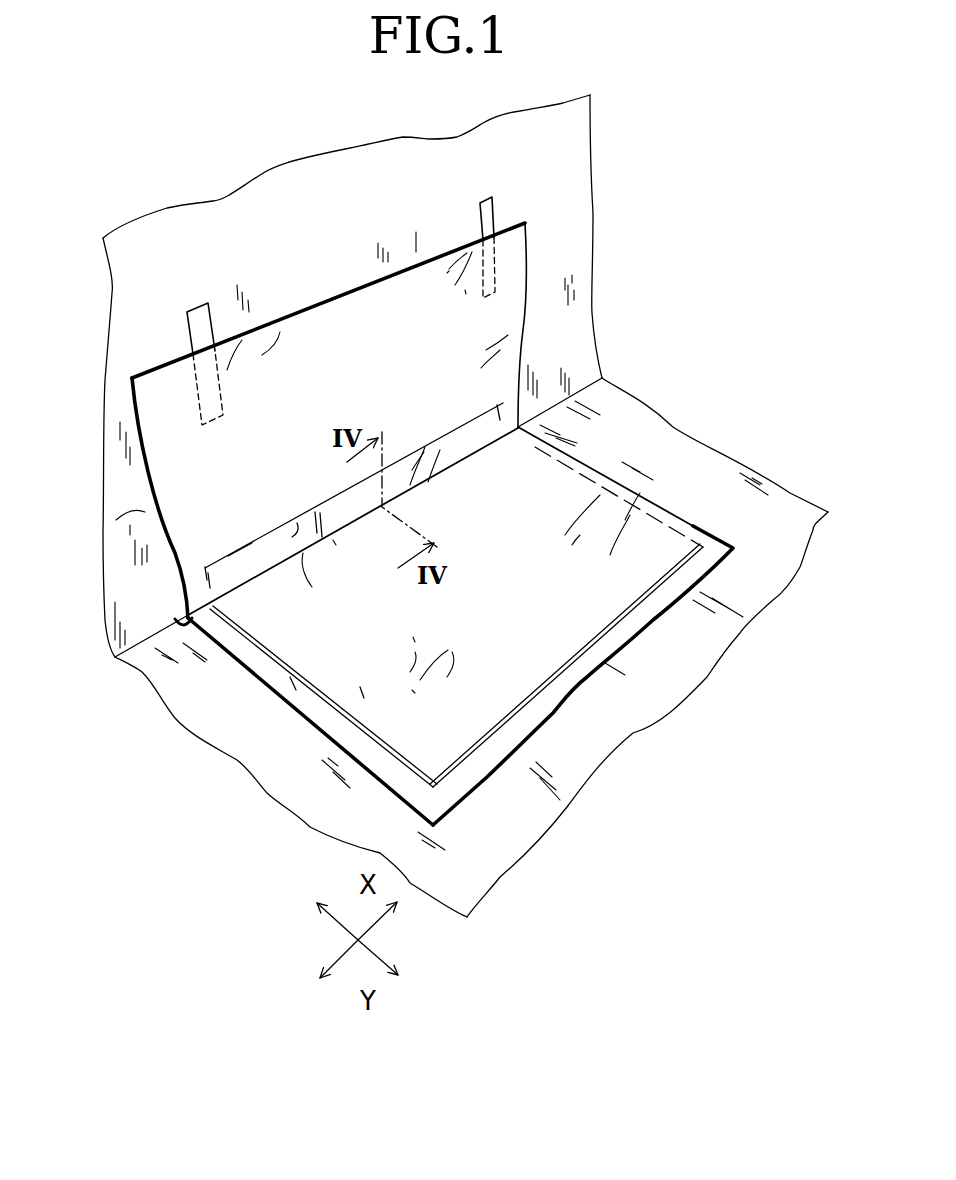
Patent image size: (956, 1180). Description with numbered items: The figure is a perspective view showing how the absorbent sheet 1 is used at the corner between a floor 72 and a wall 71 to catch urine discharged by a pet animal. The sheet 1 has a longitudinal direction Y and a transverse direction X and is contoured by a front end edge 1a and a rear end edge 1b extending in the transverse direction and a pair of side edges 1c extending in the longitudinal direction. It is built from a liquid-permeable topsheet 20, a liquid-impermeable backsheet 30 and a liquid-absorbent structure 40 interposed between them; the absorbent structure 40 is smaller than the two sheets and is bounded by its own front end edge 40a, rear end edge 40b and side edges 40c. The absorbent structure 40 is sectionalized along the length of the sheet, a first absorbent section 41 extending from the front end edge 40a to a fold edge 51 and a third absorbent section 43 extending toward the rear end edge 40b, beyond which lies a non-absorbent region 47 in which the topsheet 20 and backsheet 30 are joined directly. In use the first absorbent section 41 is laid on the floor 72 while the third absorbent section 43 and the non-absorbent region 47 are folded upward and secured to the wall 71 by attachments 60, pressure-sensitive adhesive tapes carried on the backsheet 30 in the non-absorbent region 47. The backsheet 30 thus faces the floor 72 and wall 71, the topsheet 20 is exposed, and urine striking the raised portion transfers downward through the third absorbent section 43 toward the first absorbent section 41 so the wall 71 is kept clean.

The sheet 1 is at (424, 497).
The front end edge 1a is at (557, 710).
The rear end edge 1b is at (350, 285).
The side edges 1c is at (238, 667).
The topsheet 20 is at (459, 624).
The backsheet 30 is at (321, 535).
The absorbent structure 40 is at (459, 520).
The front end edge 40a is at (627, 618).
The rear end edge 40b is at (447, 433).
The side edges 40c is at (283, 675).
The first absorbent section 41 is at (360, 687).
The third absorbent section 43 is at (297, 523).
The non-absorbent region 47 is at (317, 320).
The fold edge 51 is at (182, 615).
The attachments 60 is at (198, 325).
The wall 71 is at (126, 491).
The floor 72 is at (157, 668).